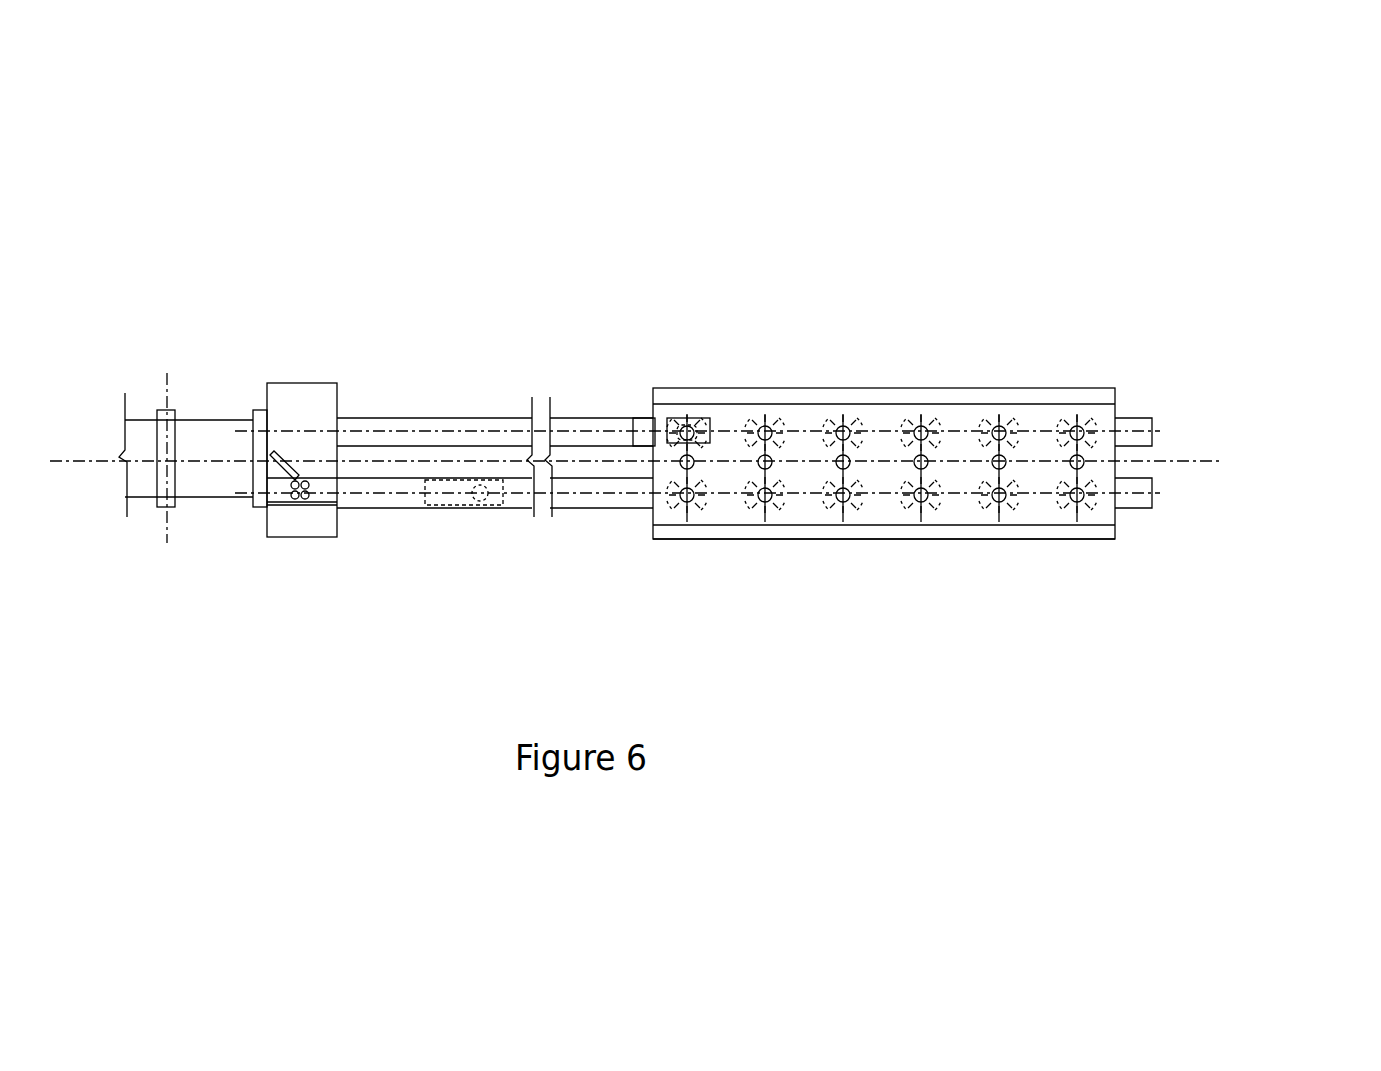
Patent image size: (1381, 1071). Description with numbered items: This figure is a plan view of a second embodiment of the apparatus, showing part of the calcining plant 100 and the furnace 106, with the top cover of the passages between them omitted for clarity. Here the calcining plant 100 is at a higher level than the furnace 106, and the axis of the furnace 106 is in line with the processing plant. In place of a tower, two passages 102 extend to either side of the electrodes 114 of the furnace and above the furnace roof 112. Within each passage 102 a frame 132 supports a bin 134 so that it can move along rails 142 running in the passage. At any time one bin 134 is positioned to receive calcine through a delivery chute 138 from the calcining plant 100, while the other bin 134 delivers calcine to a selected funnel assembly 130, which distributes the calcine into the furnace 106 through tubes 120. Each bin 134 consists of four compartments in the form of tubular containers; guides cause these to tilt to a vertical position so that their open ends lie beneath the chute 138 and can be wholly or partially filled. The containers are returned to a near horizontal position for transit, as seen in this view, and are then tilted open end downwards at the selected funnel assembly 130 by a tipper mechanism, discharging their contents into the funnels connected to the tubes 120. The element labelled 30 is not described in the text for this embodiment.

The heater block 30 is at (772, 418).
The calcining plant 100 is at (204, 404).
The passages 102 is at (594, 418).
The furnace 106 is at (1132, 405).
The furnace roof 112 is at (1108, 520).
The electrodes 114 is at (1085, 460).
The tubes 120 is at (680, 522).
The funnel assembly 130 is at (1062, 500).
The frame 132 is at (630, 418).
The bin 134 is at (284, 515).
The delivery chute 138 is at (286, 455).
The rails 142 is at (457, 431).